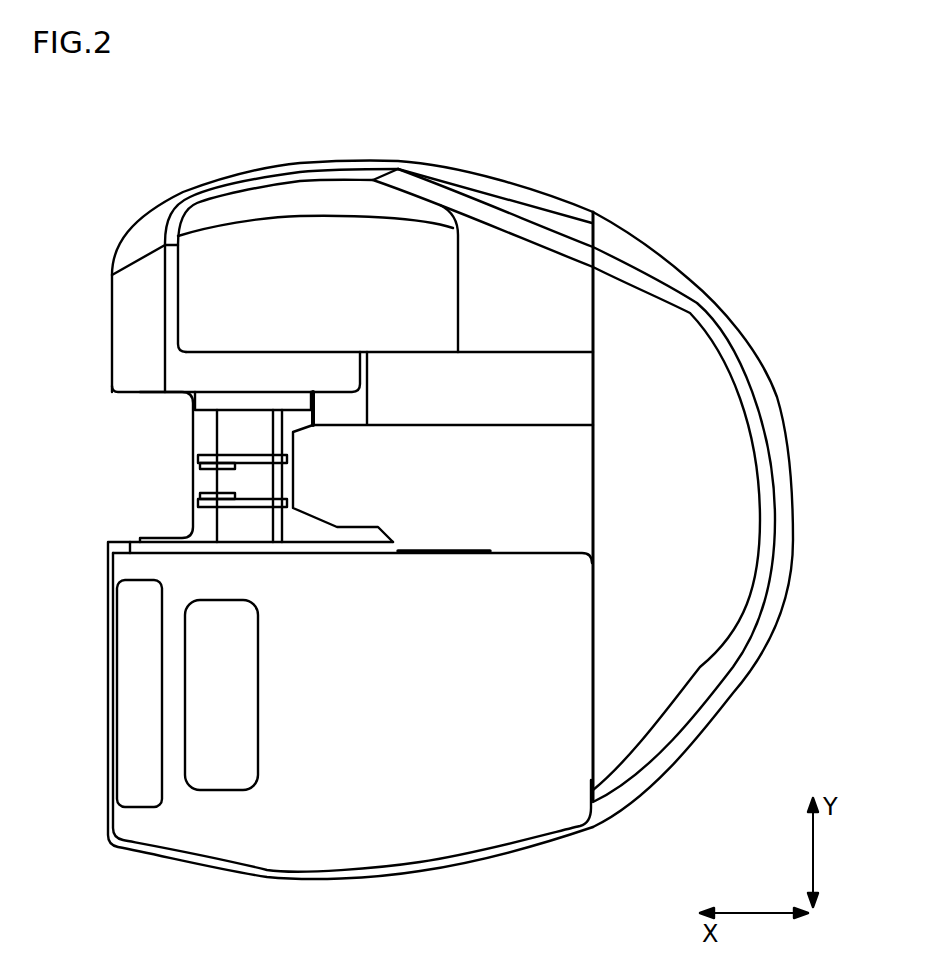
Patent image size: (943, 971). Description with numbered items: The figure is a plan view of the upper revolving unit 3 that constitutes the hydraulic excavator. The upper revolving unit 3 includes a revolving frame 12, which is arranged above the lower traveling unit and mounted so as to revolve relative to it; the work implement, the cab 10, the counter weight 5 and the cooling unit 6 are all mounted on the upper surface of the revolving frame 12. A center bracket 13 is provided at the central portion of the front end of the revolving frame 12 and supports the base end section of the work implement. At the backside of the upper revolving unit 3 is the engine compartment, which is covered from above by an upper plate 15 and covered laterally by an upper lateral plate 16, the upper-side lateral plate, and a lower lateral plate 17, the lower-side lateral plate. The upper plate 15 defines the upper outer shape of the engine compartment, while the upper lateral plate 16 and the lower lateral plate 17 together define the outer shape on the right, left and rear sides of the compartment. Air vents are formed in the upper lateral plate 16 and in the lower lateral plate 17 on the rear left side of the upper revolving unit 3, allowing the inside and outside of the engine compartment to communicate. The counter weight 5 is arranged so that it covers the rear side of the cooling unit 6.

The upper revolving unit 3 is at (126, 153).
The counter weight 5 is at (772, 435).
The cooling unit 6 is at (683, 649).
The cab 10 is at (363, 783).
The revolving frame 12 is at (205, 433).
The center bracket 13 is at (235, 482).
The upper plate 15 is at (648, 343).
The upper lateral plate 16 is at (697, 307).
The lower lateral plate 17 is at (738, 323).